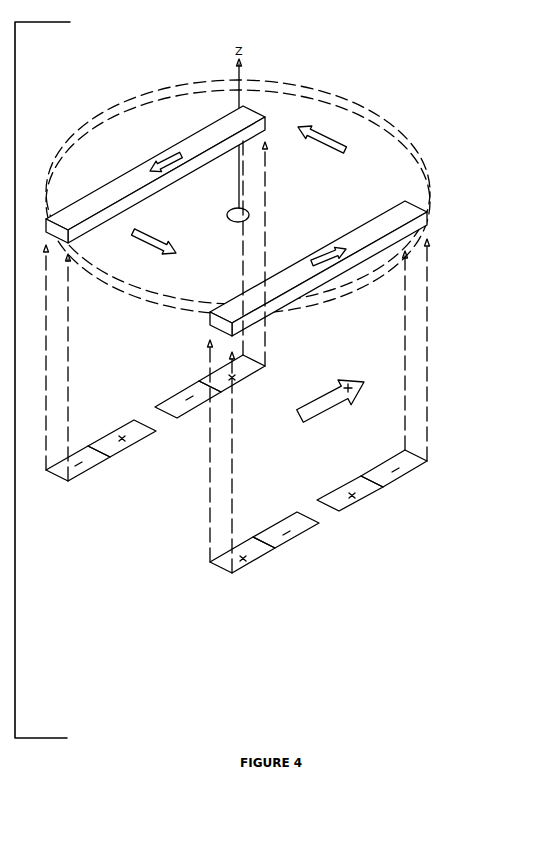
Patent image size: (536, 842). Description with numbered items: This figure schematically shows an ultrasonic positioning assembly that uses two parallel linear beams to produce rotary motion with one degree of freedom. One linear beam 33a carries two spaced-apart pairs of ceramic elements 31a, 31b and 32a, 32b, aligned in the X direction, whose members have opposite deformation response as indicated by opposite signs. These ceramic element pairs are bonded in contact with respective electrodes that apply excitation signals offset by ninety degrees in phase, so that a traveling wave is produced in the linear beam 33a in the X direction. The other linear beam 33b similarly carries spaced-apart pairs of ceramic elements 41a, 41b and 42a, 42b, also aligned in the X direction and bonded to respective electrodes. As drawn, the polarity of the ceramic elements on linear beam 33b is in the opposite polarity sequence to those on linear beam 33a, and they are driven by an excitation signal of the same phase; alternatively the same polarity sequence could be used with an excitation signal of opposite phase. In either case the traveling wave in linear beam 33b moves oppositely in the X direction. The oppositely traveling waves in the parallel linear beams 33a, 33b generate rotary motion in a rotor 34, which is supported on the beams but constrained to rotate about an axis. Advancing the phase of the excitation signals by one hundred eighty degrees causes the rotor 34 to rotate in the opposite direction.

The ceramic element 31a is at (250, 563).
The ceramic element 31b is at (295, 531).
The ceramic element 32a is at (347, 503).
The ceramic element 32b is at (408, 468).
The linear beam 33a is at (393, 212).
The linear beam 33b is at (183, 137).
The rotor 34 is at (338, 126).
The ceramic element 41a is at (83, 465).
The ceramic element 41b is at (137, 433).
The ceramic element 42a is at (178, 412).
The ceramic element 42b is at (225, 386).